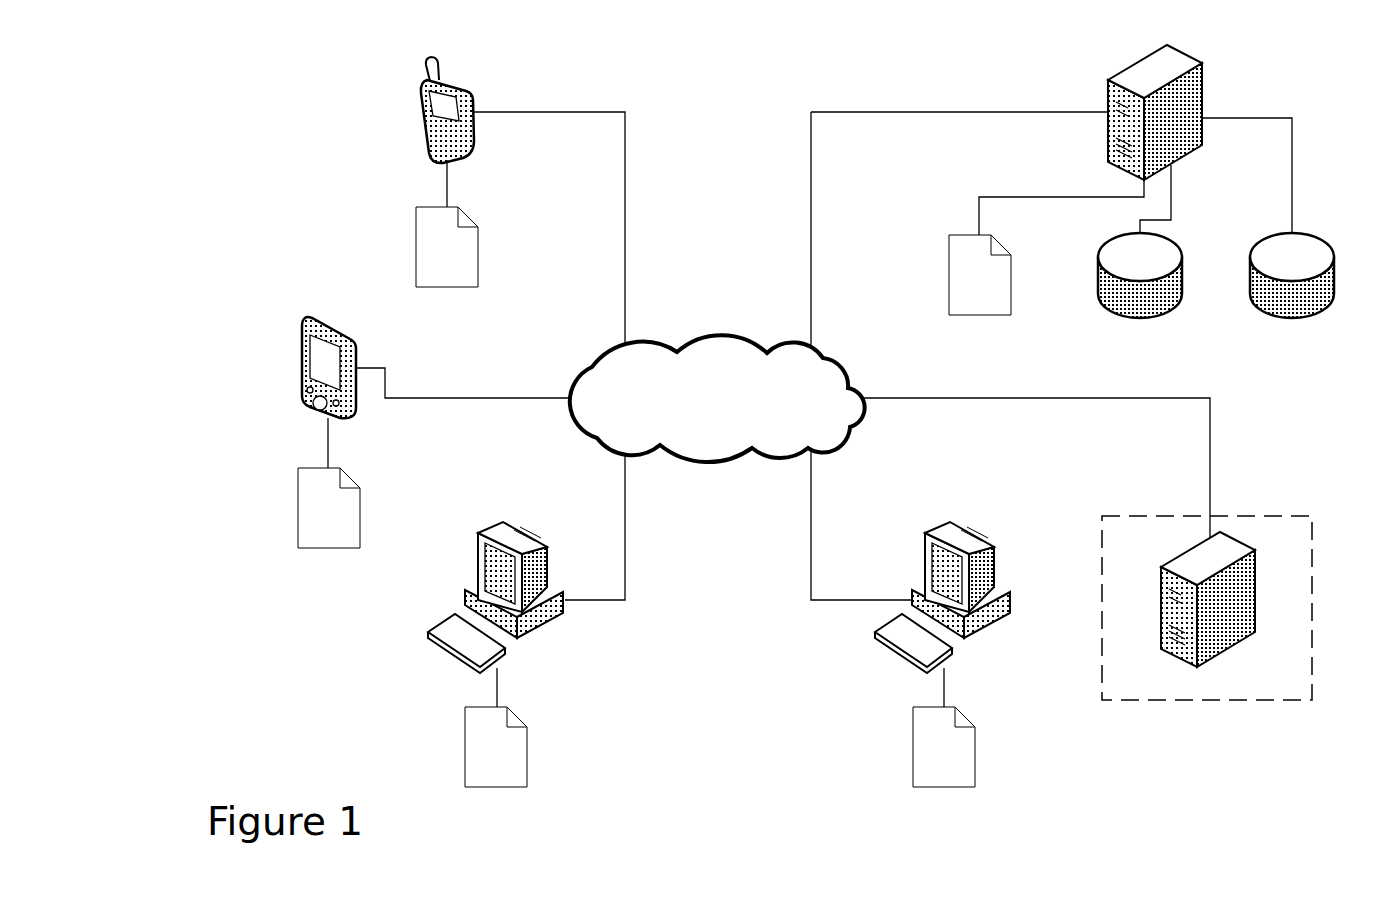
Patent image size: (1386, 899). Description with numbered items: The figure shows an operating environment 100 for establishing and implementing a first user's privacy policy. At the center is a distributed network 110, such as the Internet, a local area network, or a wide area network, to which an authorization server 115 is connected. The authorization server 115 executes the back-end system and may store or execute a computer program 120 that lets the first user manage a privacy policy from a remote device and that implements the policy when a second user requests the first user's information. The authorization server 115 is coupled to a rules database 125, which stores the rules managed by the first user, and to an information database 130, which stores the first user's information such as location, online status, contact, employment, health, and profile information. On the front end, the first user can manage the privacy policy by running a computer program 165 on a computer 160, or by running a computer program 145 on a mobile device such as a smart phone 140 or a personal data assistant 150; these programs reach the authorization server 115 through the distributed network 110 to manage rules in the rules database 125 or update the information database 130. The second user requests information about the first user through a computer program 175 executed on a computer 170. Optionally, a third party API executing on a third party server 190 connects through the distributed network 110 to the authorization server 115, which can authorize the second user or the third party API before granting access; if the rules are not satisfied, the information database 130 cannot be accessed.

The operating environment 100 is at (274, 52).
The distributed network 110 is at (717, 388).
The authorization server 115 is at (1218, 107).
The computer program 120 is at (980, 290).
The rules database 125 is at (1140, 310).
The information database 130 is at (1295, 310).
The smart phone 140 is at (422, 111).
The computer program 145 is at (388, 394).
The personal data assistant (PDA) 150 is at (300, 353).
The computer 160 is at (517, 598).
The computer program 165 is at (496, 765).
The computer 170 is at (967, 598).
The computer program 175 is at (944, 765).
The third party server 190 is at (1207, 647).